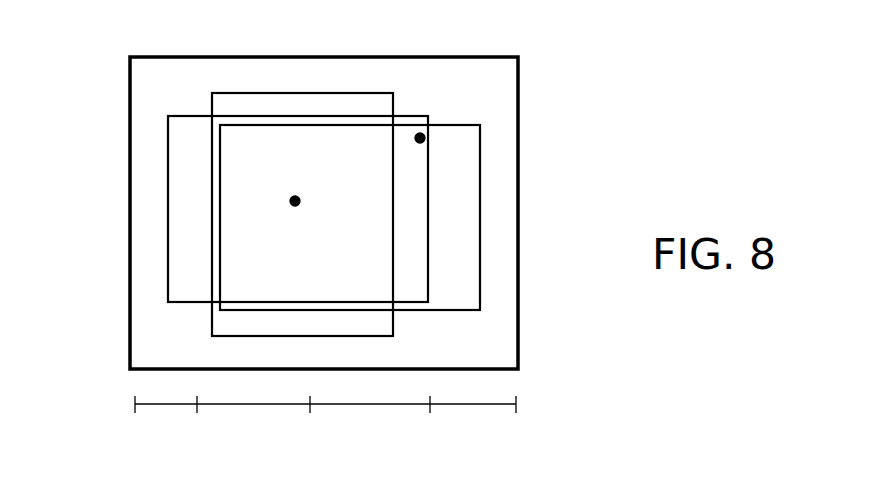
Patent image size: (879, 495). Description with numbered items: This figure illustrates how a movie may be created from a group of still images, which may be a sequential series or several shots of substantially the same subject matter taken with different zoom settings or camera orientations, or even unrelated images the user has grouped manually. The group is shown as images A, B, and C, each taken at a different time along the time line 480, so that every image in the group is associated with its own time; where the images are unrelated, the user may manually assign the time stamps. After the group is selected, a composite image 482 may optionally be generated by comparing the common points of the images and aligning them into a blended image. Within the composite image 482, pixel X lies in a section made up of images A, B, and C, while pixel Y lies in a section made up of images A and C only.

The composite image 482 is at (276, 213).
The time line 480 is at (108, 399).
The image A is at (292, 223).
The image B is at (291, 208).
The image C is at (352, 206).
The pixel X is at (296, 215).
The pixel Y is at (419, 152).